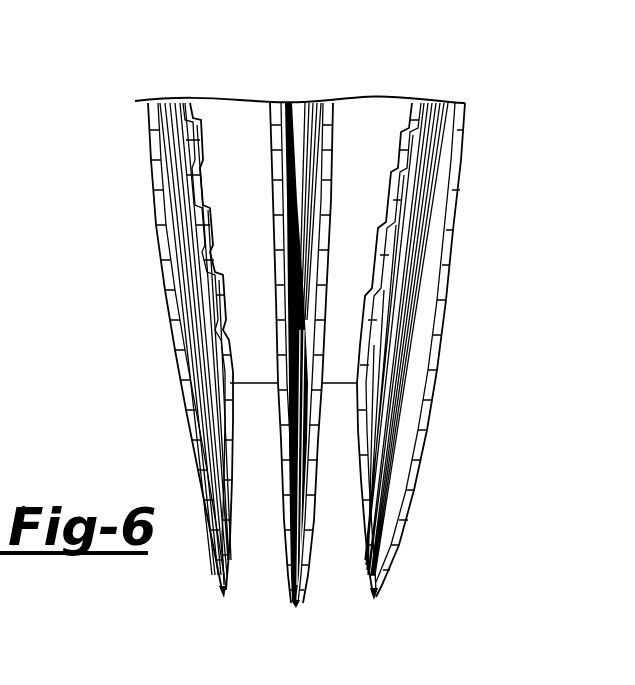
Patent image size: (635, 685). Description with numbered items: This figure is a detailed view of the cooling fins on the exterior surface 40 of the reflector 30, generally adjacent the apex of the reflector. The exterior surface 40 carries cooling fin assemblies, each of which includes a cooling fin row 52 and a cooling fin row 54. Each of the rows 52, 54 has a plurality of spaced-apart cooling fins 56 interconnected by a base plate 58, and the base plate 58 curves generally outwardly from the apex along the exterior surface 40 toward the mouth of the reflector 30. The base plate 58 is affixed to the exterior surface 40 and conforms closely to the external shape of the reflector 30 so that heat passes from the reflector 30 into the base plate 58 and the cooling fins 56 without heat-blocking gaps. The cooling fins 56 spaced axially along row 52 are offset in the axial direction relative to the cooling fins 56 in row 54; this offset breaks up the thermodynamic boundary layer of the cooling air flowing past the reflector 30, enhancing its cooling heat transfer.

The reflector 30 is at (242, 62).
The exterior surface 40 is at (242, 108).
The cooling fin row 52 is at (218, 600).
The cooling fin row 54 is at (284, 612).
The cooling fins 56 is at (435, 491).
The base plate 58 is at (368, 112).